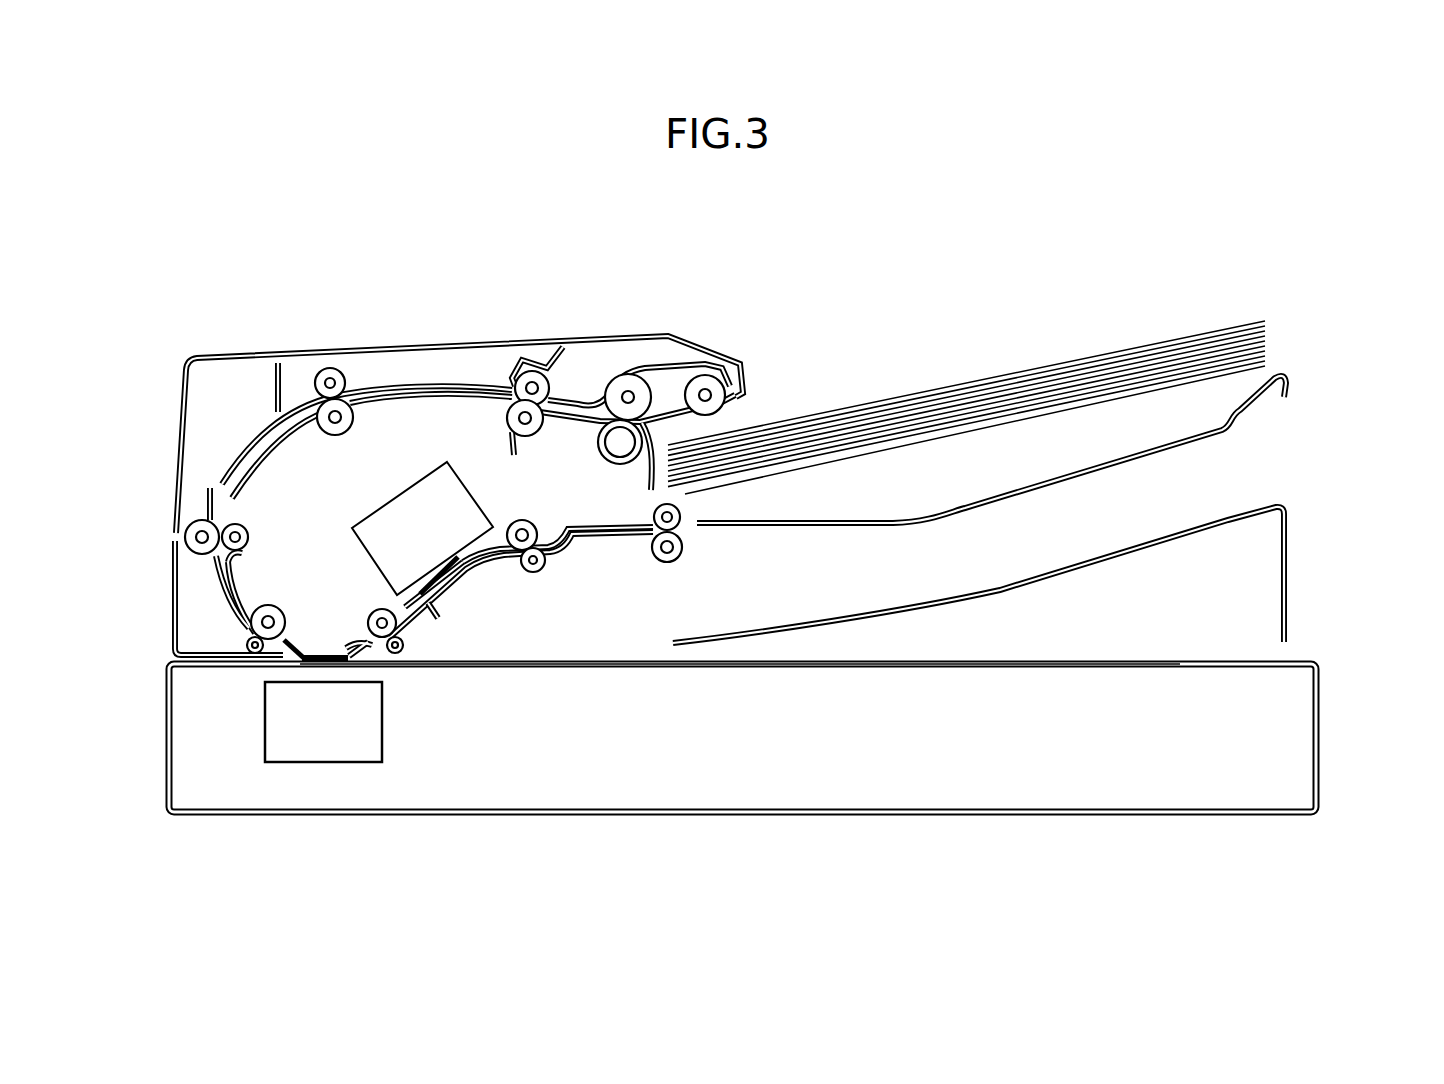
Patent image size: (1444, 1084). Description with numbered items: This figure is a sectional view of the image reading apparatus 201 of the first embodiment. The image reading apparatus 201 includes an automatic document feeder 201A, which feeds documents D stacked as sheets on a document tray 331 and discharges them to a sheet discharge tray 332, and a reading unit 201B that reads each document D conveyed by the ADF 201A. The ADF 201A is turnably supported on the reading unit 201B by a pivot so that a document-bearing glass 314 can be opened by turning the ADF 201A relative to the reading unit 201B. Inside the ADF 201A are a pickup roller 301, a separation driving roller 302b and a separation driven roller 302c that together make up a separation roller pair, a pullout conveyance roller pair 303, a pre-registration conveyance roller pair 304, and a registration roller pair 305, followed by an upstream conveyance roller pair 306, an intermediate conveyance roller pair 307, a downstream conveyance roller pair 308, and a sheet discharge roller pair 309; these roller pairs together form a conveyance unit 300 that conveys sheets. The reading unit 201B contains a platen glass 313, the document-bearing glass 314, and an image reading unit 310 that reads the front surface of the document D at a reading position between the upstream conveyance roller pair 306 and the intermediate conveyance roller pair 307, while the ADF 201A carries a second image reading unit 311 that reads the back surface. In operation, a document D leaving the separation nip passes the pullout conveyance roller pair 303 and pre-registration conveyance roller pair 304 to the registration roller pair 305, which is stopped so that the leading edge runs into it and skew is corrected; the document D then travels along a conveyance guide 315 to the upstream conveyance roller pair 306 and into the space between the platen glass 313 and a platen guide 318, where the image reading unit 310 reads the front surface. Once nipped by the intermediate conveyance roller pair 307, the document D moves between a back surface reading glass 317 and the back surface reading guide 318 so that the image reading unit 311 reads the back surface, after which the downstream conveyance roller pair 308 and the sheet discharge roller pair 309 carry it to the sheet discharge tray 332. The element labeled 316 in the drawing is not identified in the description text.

The image reading apparatus 201 is at (215, 311).
The automatic document feeder 201A is at (175, 400).
The reading unit 201B is at (162, 750).
The conveyance unit 300 is at (216, 451).
The pickup roller 301 is at (718, 370).
The separation driving roller 302b is at (606, 378).
The separation driven roller 302c is at (604, 442).
The pullout conveyance roller pair 303 is at (517, 378).
The pre-registration conveyance roller pair 304 is at (322, 376).
The registration roller pair 305 is at (200, 521).
The upstream conveyance roller pair 306 is at (247, 631).
The intermediate conveyance roller pair 307 is at (404, 646).
The downstream conveyance roller pair 308 is at (536, 522).
The sheet discharge roller pair 309 is at (683, 546).
The image reading unit 310 is at (266, 726).
The image reading unit 311 is at (397, 494).
The platen glass 313 is at (312, 667).
The document-bearing glass 314 is at (1062, 662).
The conveyance guide 315 is at (226, 605).
The conveyance guide 316 is at (331, 655).
The back surface reading glass 317 is at (410, 590).
The platen guide 318 is at (458, 588).
The document tray 331 is at (1190, 393).
The sheet discharge tray 332 is at (1230, 517).
The document D is at (953, 382).